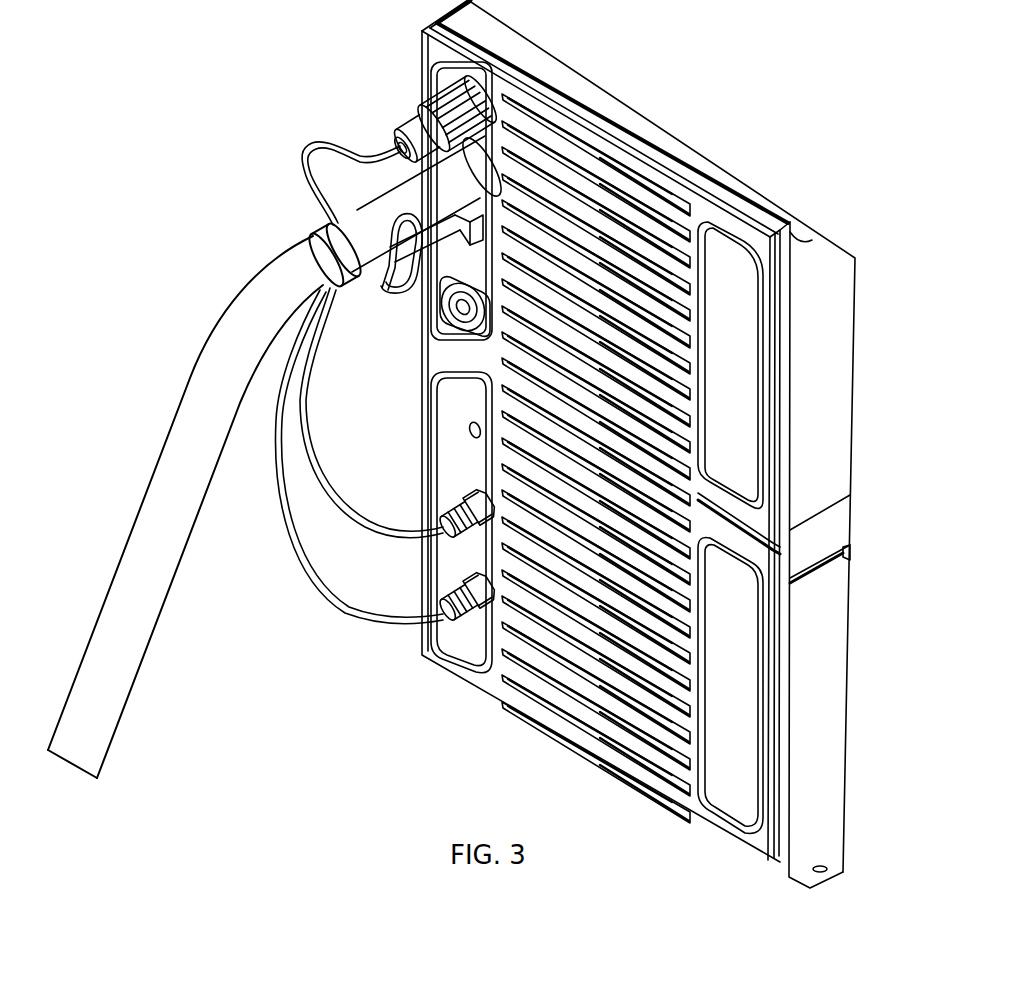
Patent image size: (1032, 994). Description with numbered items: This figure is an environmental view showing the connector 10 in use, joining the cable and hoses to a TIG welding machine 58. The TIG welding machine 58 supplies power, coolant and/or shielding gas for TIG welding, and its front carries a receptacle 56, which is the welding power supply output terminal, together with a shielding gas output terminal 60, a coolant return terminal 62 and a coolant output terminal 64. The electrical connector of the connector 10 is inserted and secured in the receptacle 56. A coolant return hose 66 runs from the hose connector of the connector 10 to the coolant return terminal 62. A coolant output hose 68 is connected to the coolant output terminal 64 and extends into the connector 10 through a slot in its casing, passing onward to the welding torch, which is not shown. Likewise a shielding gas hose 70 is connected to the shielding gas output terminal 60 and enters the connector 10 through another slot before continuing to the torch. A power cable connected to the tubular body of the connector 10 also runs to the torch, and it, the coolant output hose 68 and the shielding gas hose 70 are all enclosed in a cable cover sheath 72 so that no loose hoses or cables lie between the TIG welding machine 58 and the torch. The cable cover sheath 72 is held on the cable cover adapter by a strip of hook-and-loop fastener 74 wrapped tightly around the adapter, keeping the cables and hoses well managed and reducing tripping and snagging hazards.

The connector 10 is at (377, 193).
The receptacle 56 is at (493, 147).
The TIG welding machine 58 is at (420, 50).
The shielding gas output terminal 60 is at (445, 300).
The coolant return terminal 62 is at (440, 523).
The coolant output terminal 64 is at (443, 630).
The coolant return hose 66 is at (338, 498).
The coolant output hose 68 is at (320, 607).
The shielding gas hose 70 is at (388, 292).
The cable cover sheath 72 is at (123, 718).
The hook-and-loop fastener 74 is at (322, 262).